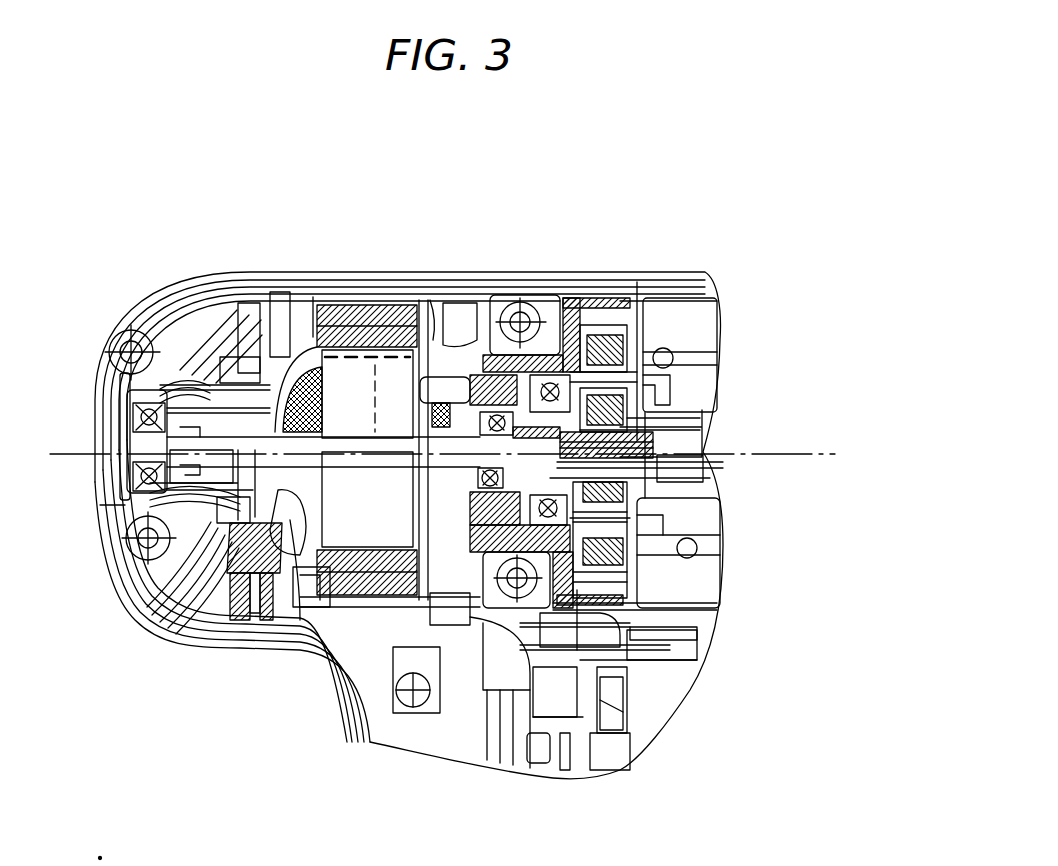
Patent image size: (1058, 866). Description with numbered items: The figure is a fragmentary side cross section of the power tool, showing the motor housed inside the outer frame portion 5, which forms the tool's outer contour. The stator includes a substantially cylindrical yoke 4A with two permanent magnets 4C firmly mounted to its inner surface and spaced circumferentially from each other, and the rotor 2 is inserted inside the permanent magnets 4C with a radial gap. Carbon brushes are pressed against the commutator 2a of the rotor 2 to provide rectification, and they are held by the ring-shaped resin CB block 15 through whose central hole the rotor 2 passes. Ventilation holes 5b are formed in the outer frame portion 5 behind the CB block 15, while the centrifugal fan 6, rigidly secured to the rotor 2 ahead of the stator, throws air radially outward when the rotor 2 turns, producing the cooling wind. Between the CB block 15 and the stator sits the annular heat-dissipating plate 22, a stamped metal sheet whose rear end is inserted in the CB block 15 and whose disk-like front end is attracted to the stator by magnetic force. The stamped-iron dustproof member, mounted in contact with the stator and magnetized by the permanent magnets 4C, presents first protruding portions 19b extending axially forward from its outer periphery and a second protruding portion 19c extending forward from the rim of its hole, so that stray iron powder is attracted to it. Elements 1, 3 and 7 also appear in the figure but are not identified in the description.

The output shaft 1 is at (667, 452).
The rotor 2 is at (376, 533).
The commutator 2a is at (115, 525).
The bearing 3 is at (130, 408).
The yoke 4A is at (317, 303).
The permanent magnets 4C is at (383, 307).
The outer frame portion 5 is at (667, 277).
The ventilation holes 5b is at (213, 327).
The centrifugal fan 6 is at (465, 600).
The partition wall 7 is at (307, 623).
The CB block 15 is at (262, 623).
The first protruding portions 19b is at (497, 340).
The second protruding portion 19c is at (432, 340).
The heat-dissipating plate 22 is at (280, 347).